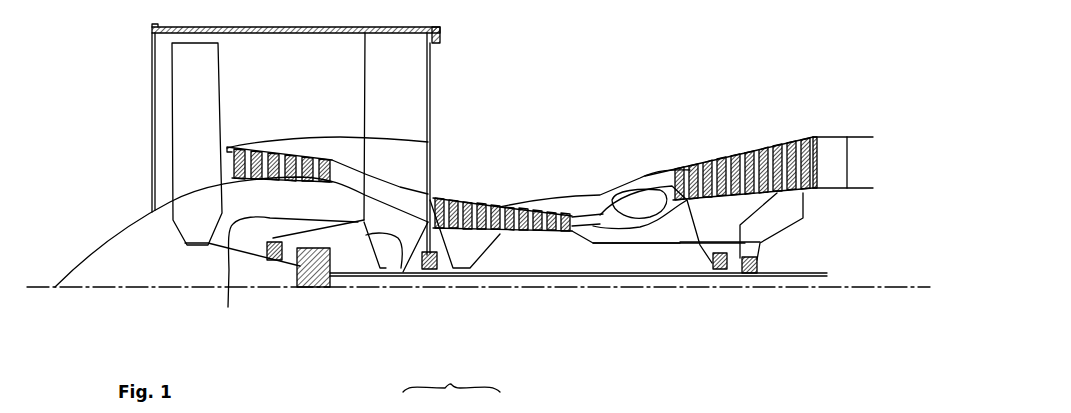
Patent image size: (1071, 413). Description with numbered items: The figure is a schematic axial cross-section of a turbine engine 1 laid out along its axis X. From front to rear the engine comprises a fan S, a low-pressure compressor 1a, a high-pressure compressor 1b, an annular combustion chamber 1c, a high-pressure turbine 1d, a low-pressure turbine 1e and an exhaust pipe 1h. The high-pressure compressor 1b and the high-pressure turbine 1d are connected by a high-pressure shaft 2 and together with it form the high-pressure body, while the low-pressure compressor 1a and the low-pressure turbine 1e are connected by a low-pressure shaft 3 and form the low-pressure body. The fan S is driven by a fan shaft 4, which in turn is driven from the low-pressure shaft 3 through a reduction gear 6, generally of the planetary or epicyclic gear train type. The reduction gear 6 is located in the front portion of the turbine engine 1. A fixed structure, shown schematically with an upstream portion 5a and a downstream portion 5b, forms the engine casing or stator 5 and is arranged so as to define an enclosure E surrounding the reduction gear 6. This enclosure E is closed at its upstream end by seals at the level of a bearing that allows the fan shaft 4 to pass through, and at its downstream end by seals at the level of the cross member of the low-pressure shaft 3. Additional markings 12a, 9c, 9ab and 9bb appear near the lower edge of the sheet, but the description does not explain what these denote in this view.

The turbine engine 1 is at (548, 114).
The low-pressure compressor 1a is at (240, 147).
The high-pressure compressor 1b is at (460, 198).
The annular combustion chamber 1c is at (626, 205).
The high-pressure turbine 1d is at (690, 180).
The low-pressure turbine 1e is at (800, 142).
The exhaust pipe 1h is at (858, 160).
The fan S is at (187, 96).
The engine axis X is at (40, 289).
The high-pressure shaft 2 is at (623, 245).
The low-pressure shaft 3 is at (530, 278).
The fan shaft 4 is at (257, 270).
The engine casing or stator 5 is at (345, 214).
The upstream portion 5a is at (241, 255).
The downstream portion 5b is at (401, 272).
The reduction gear 6 is at (313, 290).
The enclosure E is at (343, 237).
The bearing support 12a is at (349, 404).
The bearing assembly 9c is at (451, 377).
The bearing 9ab is at (419, 405).
The bearing 9bb is at (464, 405).